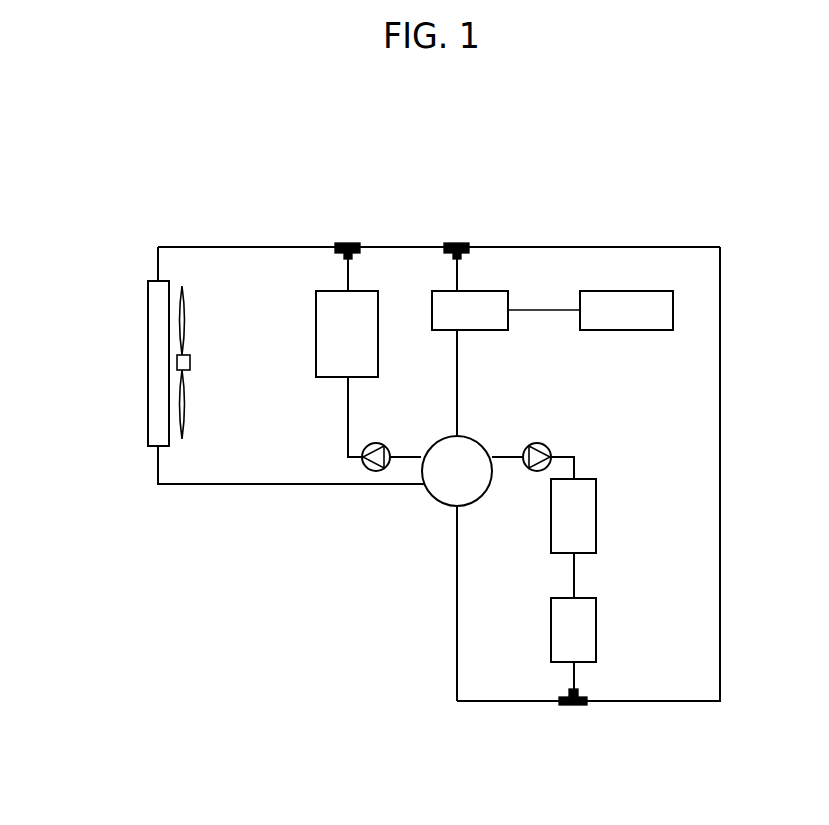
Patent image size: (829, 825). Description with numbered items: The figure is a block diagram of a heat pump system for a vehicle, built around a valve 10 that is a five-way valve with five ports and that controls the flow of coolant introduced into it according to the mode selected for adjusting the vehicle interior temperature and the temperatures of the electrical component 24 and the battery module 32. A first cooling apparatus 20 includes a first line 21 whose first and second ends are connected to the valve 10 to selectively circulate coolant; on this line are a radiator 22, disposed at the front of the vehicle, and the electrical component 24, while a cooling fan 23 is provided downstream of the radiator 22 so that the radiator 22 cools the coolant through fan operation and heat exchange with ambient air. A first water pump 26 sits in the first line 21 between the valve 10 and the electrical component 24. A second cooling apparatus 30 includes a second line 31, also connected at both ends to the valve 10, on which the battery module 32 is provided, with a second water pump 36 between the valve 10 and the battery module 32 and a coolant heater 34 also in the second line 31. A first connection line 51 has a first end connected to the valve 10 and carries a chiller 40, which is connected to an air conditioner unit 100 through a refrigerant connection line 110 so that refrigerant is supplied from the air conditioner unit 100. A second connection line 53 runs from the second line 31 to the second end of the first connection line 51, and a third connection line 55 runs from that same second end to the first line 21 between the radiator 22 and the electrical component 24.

The valve 10 is at (428, 494).
The first cooling apparatus 20 is at (264, 393).
The first line 21 is at (327, 484).
The radiator 22 is at (148, 364).
The cooling fan 23 is at (187, 318).
The electrical component 24 is at (316, 332).
The first water pump 26 is at (381, 444).
The second cooling apparatus 30 is at (504, 562).
The second line 31 is at (574, 575).
The battery module 32 is at (596, 517).
The coolant heater 34 is at (596, 630).
The second water pump 36 is at (541, 444).
The chiller 40 is at (490, 330).
The first connection line 51 is at (457, 402).
The second connection line 53 is at (720, 318).
The third connection line 55 is at (401, 247).
The air conditioner unit 100 is at (628, 330).
The refrigerant connection line 110 is at (543, 310).